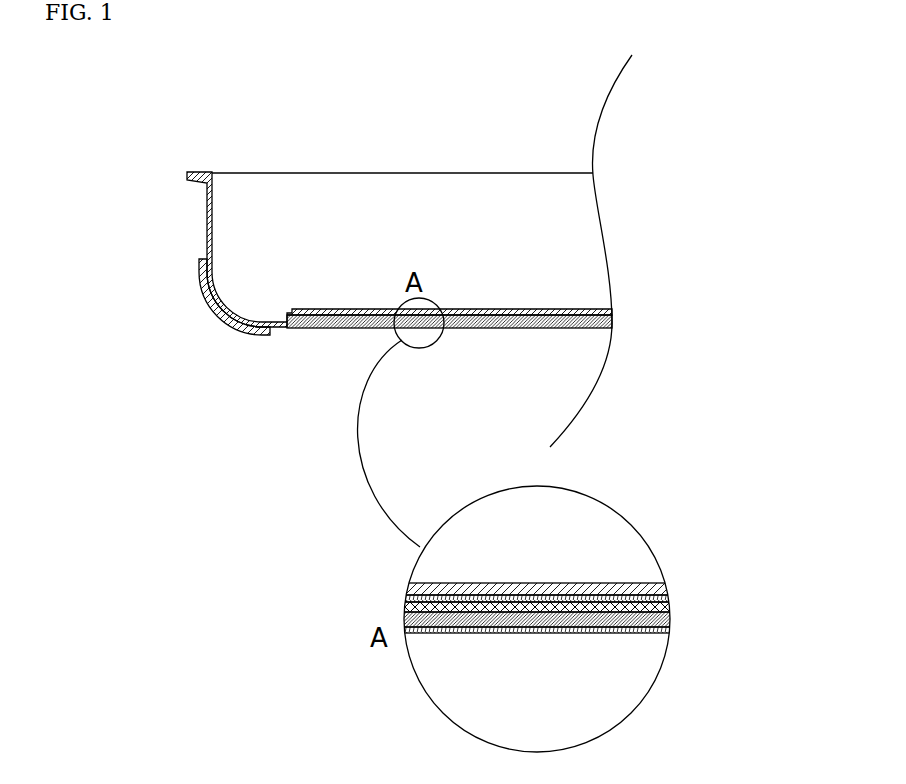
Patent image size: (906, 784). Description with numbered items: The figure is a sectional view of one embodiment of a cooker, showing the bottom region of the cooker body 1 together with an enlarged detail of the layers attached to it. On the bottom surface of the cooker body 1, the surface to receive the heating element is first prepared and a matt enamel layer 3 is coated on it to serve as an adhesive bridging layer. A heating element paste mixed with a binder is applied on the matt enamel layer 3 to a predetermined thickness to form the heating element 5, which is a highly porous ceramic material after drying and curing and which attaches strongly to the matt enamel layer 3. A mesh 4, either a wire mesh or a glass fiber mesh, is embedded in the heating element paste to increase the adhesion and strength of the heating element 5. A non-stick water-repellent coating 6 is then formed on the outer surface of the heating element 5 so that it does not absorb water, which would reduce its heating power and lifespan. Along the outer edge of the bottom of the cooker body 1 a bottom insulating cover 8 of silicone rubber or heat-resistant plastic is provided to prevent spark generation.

The cooker body 1 is at (208, 222).
The matt enamel layer 3 is at (612, 600).
The mesh 4 is at (645, 603).
The heating element 5 is at (627, 615).
The non-stick water-repellent coating 6 is at (630, 633).
The bottom insulating cover 8 is at (220, 322).